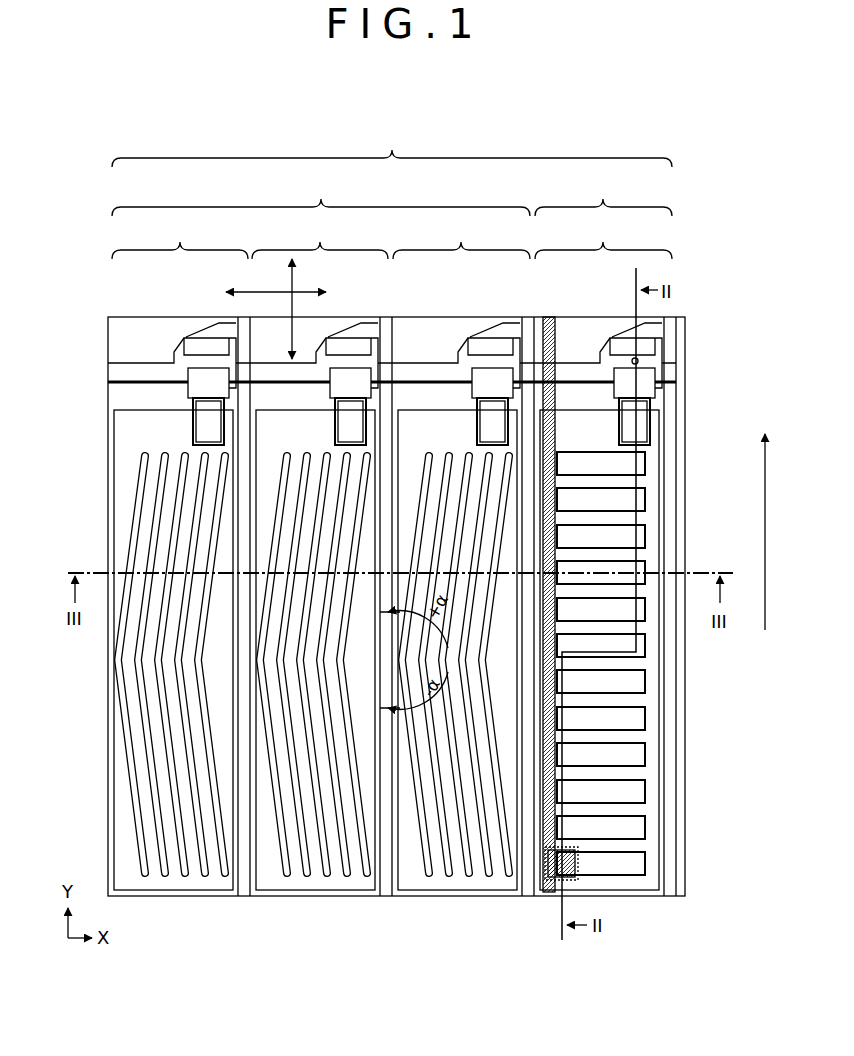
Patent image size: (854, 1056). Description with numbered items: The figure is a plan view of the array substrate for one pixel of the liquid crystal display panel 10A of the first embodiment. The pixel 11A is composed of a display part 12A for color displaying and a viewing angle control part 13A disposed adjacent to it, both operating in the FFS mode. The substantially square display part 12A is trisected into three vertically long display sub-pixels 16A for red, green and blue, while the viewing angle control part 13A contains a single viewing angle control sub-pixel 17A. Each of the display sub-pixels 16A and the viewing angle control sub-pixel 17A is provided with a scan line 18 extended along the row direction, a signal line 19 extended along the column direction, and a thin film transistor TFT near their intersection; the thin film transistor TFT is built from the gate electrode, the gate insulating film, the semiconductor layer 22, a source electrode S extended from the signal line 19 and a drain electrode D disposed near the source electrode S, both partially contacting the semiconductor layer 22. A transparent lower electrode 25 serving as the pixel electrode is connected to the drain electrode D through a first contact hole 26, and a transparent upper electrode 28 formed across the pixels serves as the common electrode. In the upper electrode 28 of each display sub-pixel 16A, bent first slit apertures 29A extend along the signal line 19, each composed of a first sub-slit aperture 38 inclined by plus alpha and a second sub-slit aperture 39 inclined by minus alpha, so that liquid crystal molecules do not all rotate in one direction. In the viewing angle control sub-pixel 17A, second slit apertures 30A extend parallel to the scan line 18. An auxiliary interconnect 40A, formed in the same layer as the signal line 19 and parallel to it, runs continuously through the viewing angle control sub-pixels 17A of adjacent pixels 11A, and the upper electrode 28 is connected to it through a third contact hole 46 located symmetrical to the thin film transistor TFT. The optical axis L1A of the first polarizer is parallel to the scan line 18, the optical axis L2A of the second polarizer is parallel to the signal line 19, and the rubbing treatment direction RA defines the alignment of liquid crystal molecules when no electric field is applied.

The liquid crystal display panel 10A is at (80, 137).
The pixel 11A is at (392, 149).
The display part 12A is at (321, 195).
The viewing angle control part 13A is at (603, 195).
The display sub-pixel 16A is at (321, 238).
The viewing angle control sub-pixel 17A is at (603, 238).
The scan line 18 is at (137, 372).
The signal line 19 is at (670, 470).
The semiconductor layer 22 is at (640, 361).
The lower electrode 25 is at (112, 822).
The first contact hole 26 is at (638, 420).
The upper electrode 28 is at (391, 653).
The first slit aperture 29A is at (118, 660).
The second slit aperture 30A is at (646, 797).
The first sub-slit aperture 38 is at (276, 664).
The second sub-slit aperture 39 is at (130, 778).
The auxiliary interconnect 40A is at (547, 320).
The third contact hole 46 is at (550, 880).
The source electrode S is at (638, 345).
The drain electrode D is at (452, 389).
The thin film transistor TFT is at (481, 360).
The optical axis of the first polarizer L1A is at (276, 281).
The optical axis of the second polarizer L2A is at (275, 309).
The rubbing treatment direction RA is at (750, 532).